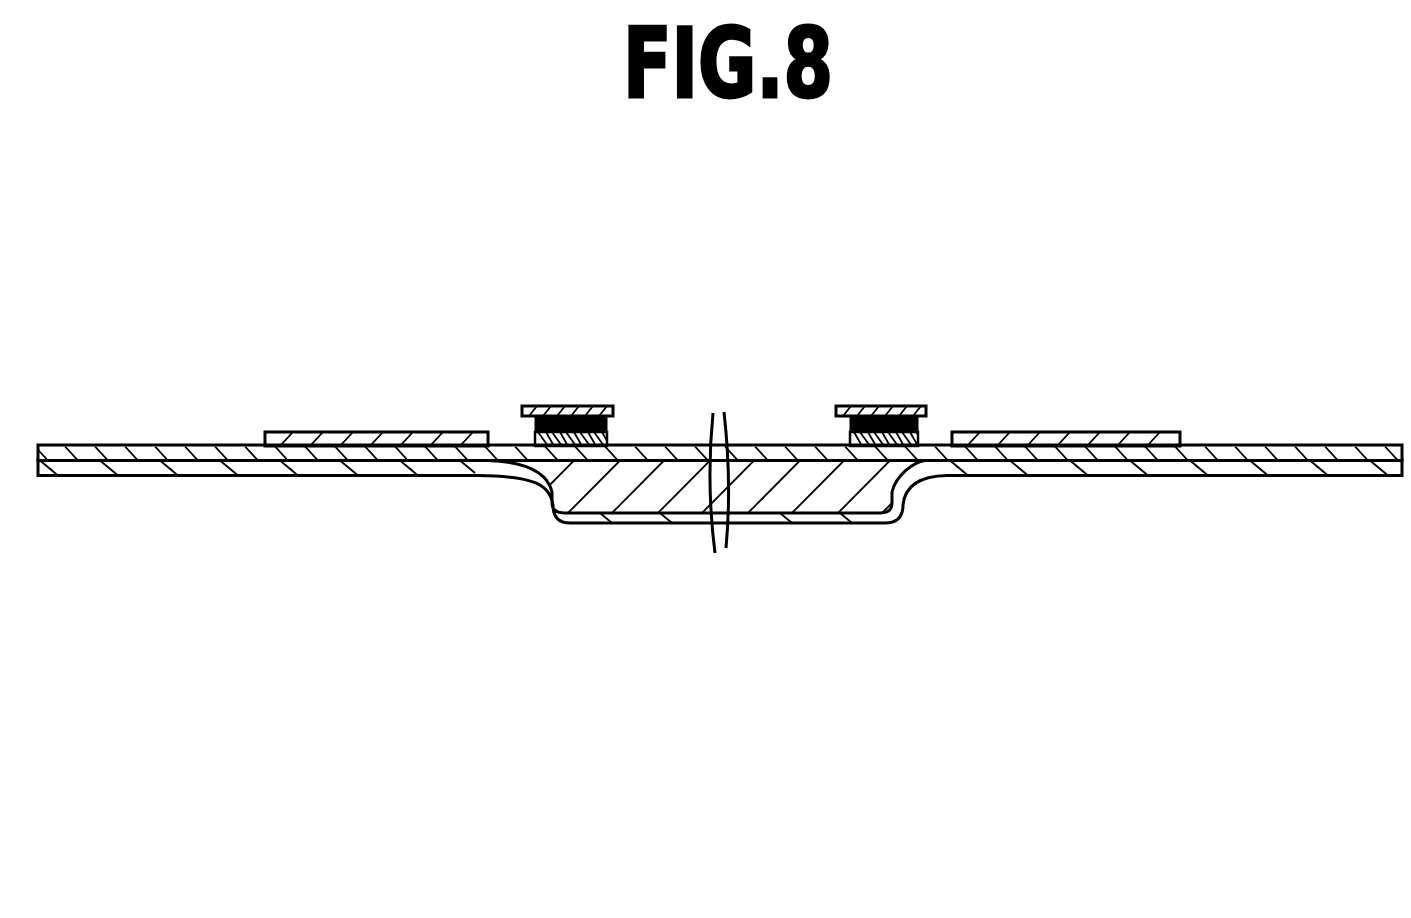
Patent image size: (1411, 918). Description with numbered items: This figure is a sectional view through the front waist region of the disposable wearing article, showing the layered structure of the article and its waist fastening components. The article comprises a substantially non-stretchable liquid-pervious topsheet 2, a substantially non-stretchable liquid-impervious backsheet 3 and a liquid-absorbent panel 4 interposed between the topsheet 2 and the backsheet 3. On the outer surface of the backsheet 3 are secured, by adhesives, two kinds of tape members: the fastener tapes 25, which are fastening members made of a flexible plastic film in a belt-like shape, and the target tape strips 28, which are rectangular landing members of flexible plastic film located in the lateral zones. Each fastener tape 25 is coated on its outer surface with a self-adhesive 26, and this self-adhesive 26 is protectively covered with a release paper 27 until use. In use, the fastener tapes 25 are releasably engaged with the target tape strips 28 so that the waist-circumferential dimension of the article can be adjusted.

The topsheet 2 is at (805, 523).
The backsheet 3 is at (1217, 446).
The liquid-absorbent panel 4 is at (680, 490).
The fastener tape 25 is at (535, 440).
The self-adhesive 26 is at (535, 424).
The release paper 27 is at (580, 406).
The target tape strip 28 is at (348, 432).